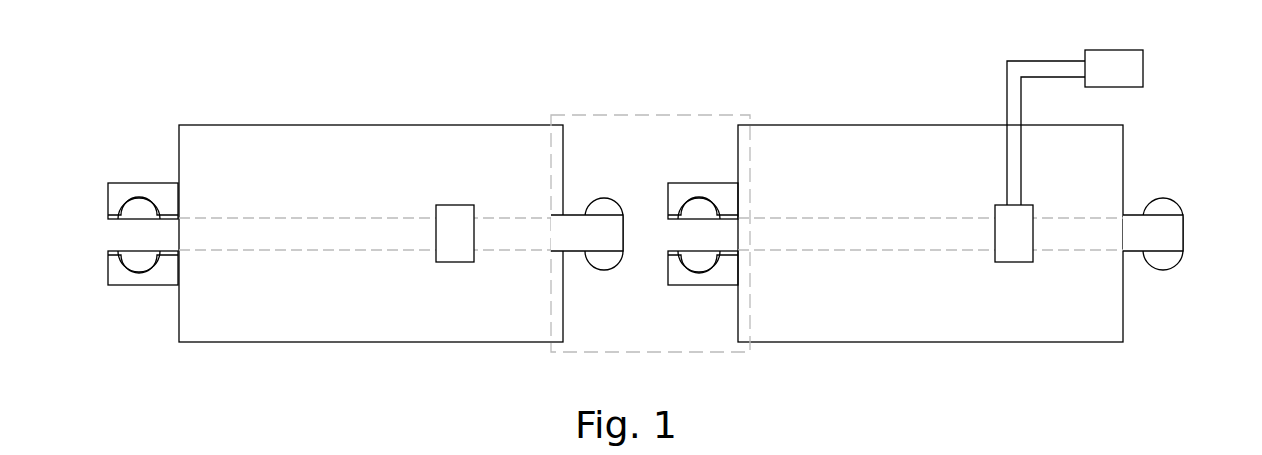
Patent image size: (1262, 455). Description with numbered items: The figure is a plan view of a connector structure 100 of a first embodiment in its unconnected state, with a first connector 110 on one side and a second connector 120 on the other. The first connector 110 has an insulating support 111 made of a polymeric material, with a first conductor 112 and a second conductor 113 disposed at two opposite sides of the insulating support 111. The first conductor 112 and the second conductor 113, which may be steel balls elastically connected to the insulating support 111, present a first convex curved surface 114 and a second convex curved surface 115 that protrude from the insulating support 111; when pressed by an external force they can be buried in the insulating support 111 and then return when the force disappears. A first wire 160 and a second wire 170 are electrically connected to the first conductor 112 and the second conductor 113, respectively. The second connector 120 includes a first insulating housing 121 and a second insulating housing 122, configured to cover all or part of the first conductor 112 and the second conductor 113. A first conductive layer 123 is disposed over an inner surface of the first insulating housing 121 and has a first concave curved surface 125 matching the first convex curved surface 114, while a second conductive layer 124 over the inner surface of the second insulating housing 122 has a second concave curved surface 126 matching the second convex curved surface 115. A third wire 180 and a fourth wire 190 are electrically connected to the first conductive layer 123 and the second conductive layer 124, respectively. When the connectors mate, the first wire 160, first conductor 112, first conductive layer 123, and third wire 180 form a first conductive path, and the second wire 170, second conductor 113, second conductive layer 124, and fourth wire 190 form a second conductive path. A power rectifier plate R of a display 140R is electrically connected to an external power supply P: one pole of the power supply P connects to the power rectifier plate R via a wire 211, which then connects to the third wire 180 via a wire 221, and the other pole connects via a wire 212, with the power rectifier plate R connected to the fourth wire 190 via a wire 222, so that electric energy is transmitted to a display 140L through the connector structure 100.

The connector structure 100 is at (673, 115).
The first connector 110 is at (618, 170).
The insulating support 111 is at (1172, 230).
The first conductor 112 is at (1168, 210).
The second conductor 113 is at (1168, 257).
The first convex curved surface 114 is at (1164, 203).
The second convex curved surface 115 is at (1164, 265).
The second connector 120 is at (376, 233).
The first insulating housing 121 is at (117, 195).
The second insulating housing 122 is at (115, 274).
The first conductive layer 123 is at (115, 222).
The second conductive layer 124 is at (115, 247).
The first concave curved surface 125 is at (134, 193).
The second concave curved surface 126 is at (134, 276).
The display 140L is at (368, 125).
The display 140R is at (868, 125).
The first wire 160 is at (571, 214).
The second wire 170 is at (571, 252).
The third wire 180 is at (168, 215).
The fourth wire 190 is at (166, 254).
The wire 211 is at (1007, 100).
The wire 212 is at (1021, 108).
The wire 221 is at (803, 217).
The wire 222 is at (803, 251).
The power rectifier plate R is at (455, 205).
The power supply P is at (1117, 50).